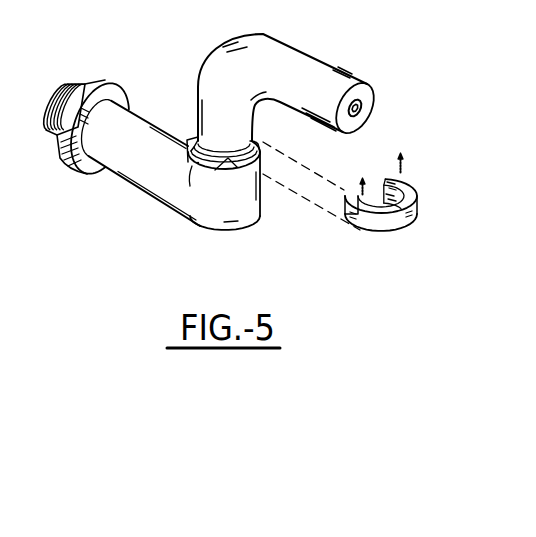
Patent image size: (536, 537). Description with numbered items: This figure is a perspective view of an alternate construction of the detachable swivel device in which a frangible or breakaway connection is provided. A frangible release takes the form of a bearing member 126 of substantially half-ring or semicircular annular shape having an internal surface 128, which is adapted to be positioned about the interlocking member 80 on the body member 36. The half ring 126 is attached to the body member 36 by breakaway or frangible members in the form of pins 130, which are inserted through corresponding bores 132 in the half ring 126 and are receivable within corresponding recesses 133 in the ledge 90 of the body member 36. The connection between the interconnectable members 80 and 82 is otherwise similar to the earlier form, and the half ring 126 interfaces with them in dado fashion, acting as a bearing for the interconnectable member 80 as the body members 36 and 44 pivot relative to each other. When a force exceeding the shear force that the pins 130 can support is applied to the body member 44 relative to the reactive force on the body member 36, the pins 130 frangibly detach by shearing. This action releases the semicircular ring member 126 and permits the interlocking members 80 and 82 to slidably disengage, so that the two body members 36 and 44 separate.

The body member 36 is at (188, 144).
The body member 44 is at (356, 27).
The interlocking member 80 is at (253, 139).
The interconnectable member 82 is at (126, 181).
The ledge 90 is at (228, 170).
The bearing member 126 is at (418, 207).
The internal surface 128 is at (412, 181).
The pins 130 is at (366, 198).
The bores 132 is at (402, 178).
The recesses 133 is at (198, 162).